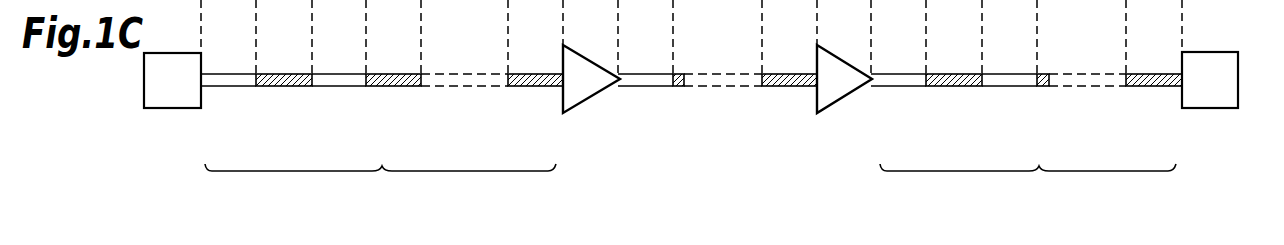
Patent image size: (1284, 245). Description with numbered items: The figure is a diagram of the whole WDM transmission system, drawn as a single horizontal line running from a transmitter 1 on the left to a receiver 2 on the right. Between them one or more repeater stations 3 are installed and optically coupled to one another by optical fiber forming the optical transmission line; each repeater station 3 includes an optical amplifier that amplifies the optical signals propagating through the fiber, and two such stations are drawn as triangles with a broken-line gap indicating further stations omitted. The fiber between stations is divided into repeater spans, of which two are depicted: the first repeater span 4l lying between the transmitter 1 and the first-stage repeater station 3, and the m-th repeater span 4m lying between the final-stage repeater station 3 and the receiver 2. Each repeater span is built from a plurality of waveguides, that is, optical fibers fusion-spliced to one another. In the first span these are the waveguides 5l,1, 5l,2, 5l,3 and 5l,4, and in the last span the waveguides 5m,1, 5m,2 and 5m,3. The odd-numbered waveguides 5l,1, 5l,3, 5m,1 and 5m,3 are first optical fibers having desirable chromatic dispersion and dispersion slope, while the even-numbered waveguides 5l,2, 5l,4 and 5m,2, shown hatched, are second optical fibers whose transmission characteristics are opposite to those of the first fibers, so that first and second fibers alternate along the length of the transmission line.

The transmitter 1 is at (165, 108).
The receiver 2 is at (1212, 108).
The repeater station 3 is at (583, 103).
The first repeater span 4l is at (380, 187).
The m-th repeater span 4m is at (1028, 187).
The waveguide 5l,1 is at (224, 86).
The waveguide 5l,2 is at (282, 86).
The waveguide 5l,3 is at (341, 86).
The waveguide 5l,4 is at (398, 86).
The waveguide 5m,1 is at (898, 86).
The waveguide 5m,2 is at (955, 86).
The waveguide 5m,3 is at (1013, 86).